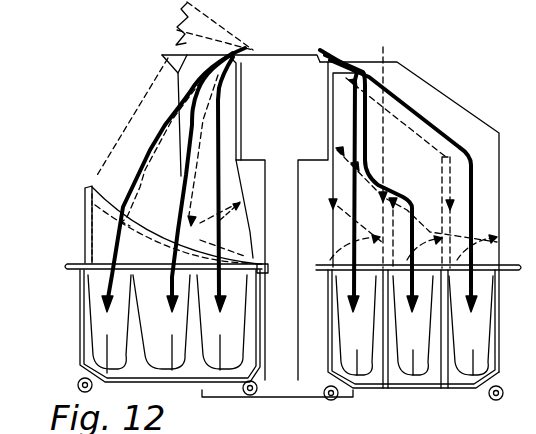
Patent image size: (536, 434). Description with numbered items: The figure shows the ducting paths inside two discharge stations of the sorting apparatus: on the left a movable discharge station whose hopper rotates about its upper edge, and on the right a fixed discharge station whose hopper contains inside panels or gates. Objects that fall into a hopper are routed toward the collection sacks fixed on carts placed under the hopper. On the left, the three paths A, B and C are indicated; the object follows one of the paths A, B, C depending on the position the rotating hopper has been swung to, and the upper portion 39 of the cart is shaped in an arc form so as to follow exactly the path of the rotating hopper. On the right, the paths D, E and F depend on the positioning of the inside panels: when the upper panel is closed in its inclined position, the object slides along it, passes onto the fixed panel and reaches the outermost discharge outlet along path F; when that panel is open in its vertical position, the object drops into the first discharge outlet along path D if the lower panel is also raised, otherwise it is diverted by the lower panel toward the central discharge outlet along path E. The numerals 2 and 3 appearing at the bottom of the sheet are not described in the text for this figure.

The upper portion of the cart 39 is at (102, 209).
The path A is at (109, 324).
The path B is at (161, 322).
The path C is at (222, 322).
The path D is at (356, 325).
The path E is at (413, 325).
The path F is at (471, 325).
The reference numeral (partial, adjacent sheet) 2 is at (410, 422).
The reference numeral (partial, adjacent sheet) 3 is at (411, 423).